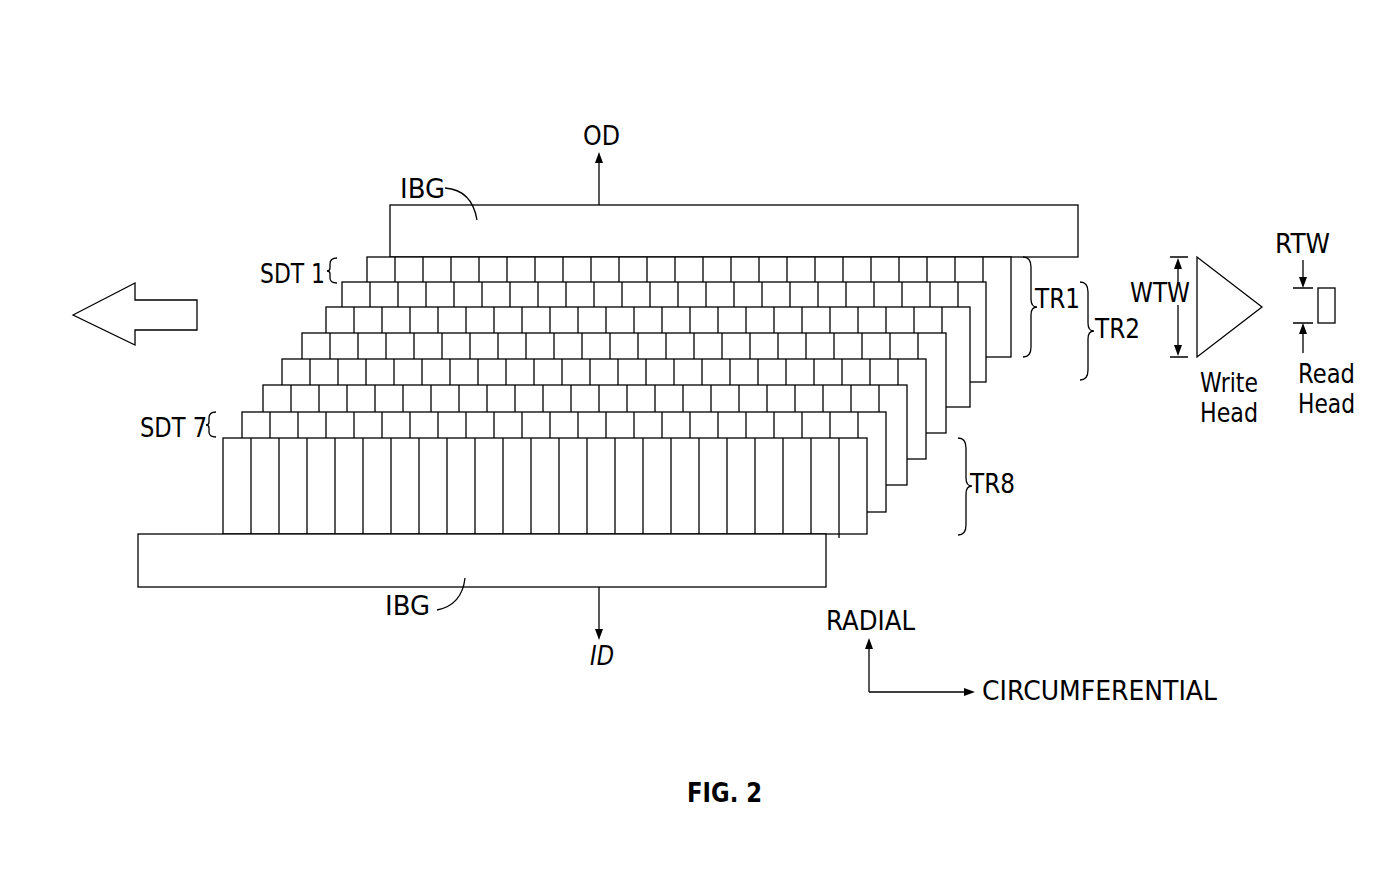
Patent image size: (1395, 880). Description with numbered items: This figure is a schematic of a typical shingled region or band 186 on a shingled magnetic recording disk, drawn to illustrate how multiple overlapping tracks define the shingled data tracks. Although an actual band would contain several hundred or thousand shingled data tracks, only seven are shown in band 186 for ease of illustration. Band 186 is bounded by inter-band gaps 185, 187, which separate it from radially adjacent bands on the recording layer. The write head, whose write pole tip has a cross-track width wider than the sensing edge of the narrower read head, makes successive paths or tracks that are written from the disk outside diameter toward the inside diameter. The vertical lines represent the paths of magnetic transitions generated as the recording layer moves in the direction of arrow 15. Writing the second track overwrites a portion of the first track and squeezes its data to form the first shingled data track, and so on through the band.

The arrow 15 is at (155, 300).
The inter-band gap 185 is at (670, 578).
The band 186 is at (304, 92).
The inter-band gap 187 is at (909, 218).